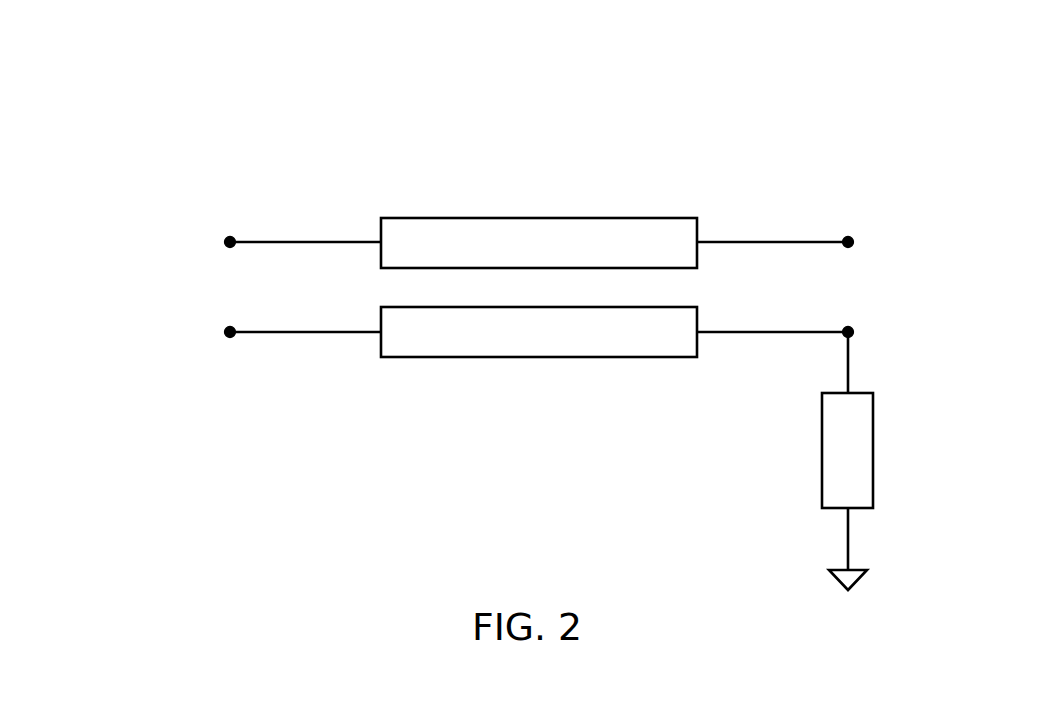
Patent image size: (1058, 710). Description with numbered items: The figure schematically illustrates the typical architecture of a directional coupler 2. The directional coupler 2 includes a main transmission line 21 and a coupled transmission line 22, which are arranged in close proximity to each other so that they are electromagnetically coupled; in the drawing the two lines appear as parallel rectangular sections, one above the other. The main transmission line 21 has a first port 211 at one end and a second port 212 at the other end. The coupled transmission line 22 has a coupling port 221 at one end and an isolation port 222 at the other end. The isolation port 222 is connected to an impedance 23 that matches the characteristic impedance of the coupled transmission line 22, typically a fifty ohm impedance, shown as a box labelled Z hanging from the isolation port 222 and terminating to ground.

The directional coupler 2 is at (178, 142).
The main transmission line 21 is at (553, 238).
The coupled transmission line 22 is at (487, 343).
The first port 211 is at (230, 250).
The second port 212 is at (852, 237).
The coupling port 221 is at (227, 338).
The isolation port 222 is at (855, 330).
The impedance 23 is at (863, 478).